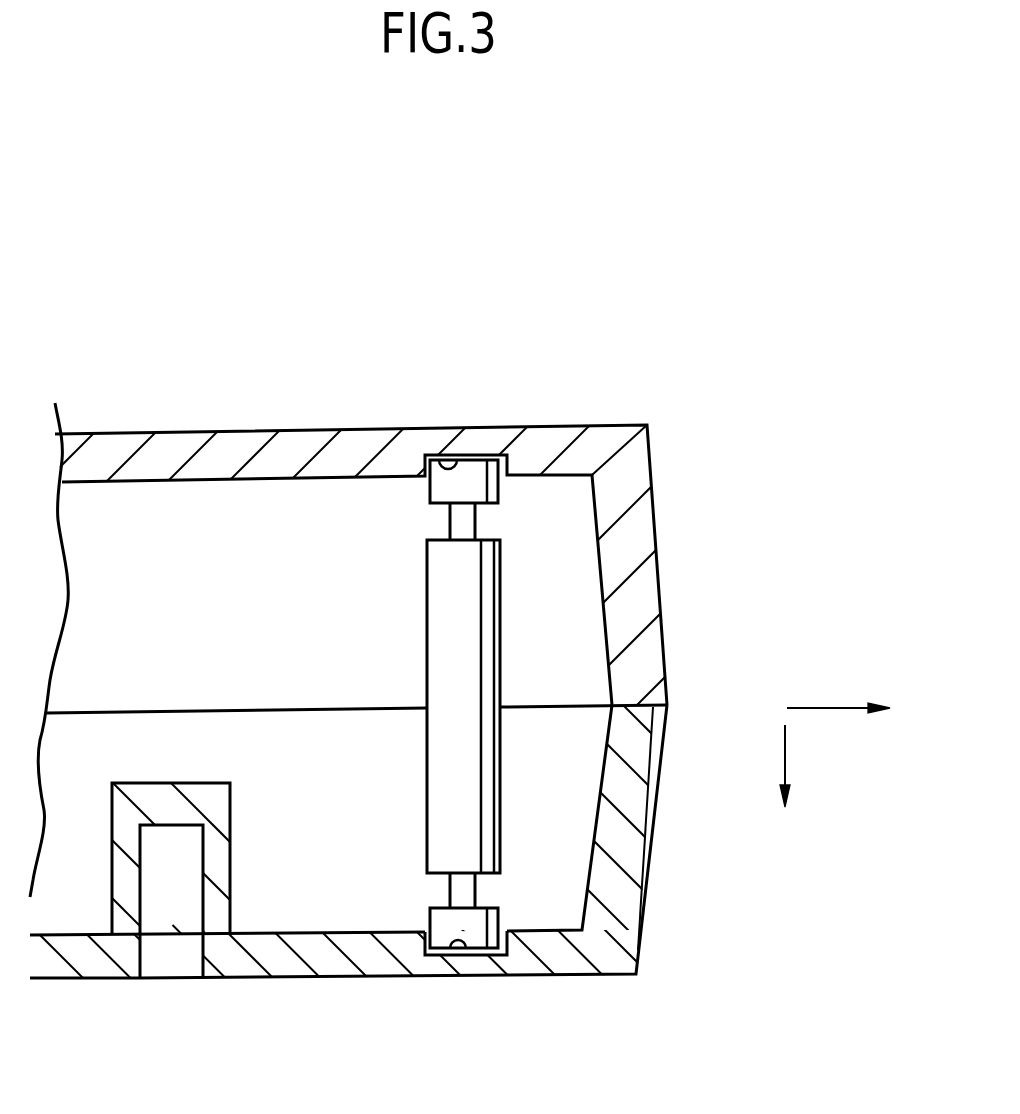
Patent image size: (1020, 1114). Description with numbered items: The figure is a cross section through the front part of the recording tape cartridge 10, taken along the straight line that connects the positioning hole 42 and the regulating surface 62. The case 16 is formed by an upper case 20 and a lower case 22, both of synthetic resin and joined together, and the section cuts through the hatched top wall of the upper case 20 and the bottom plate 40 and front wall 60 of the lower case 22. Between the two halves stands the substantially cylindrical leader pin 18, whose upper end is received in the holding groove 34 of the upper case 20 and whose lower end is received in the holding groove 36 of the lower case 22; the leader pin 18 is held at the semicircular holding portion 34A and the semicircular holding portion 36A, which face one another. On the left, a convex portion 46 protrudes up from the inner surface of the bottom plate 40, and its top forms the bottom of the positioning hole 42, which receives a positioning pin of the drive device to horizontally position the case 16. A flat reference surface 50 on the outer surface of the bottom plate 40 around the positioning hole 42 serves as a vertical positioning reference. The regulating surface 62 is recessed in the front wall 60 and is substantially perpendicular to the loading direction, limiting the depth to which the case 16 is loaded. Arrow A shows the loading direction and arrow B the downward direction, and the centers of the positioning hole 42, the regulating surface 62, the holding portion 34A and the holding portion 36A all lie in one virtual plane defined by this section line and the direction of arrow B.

The recording tape cartridge 10 is at (303, 408).
The case 16 is at (476, 740).
The leader pin 18 is at (418, 627).
The upper case 20 is at (668, 648).
The lower case 22 is at (449, 854).
The holding groove 34 is at (550, 420).
The holding portion 34A is at (440, 467).
The holding groove 36 is at (490, 985).
The holding portion 36A is at (455, 940).
The bottom plate 40 is at (330, 958).
The positioning hole 42 is at (197, 955).
The convex portion 46 is at (218, 802).
The reference surface 50 is at (117, 980).
The front wall 60 is at (627, 845).
The regulating surface 62 is at (655, 798).
The arrow A is at (854, 702).
The arrow B is at (799, 779).